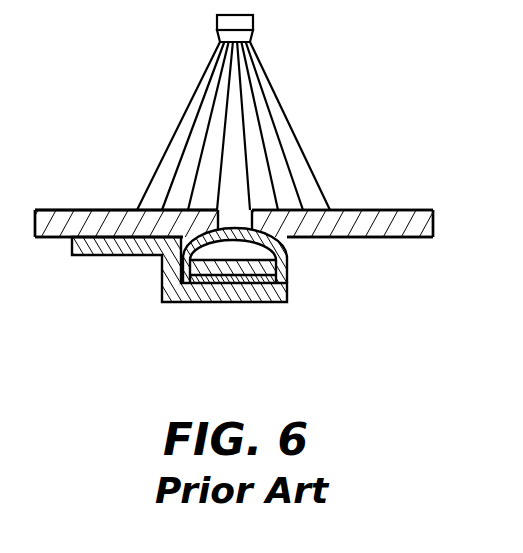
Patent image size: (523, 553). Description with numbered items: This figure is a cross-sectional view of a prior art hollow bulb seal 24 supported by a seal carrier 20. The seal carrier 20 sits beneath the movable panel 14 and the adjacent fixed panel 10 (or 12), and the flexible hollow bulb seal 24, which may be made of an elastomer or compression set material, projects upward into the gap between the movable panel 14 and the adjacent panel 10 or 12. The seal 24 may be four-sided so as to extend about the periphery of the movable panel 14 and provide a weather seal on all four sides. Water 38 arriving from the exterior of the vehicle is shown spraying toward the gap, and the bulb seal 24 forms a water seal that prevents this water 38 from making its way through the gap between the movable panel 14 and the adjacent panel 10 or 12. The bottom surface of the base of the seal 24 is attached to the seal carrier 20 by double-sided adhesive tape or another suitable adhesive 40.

The fixed panel 10 is at (350, 220).
The fixed panel 12 is at (234, 223).
The movable panel 14 is at (92, 218).
The seal carrier 20 is at (170, 268).
The hollow bulb seal 24 is at (212, 263).
The water 38 is at (280, 100).
The adhesive 40 is at (256, 278).